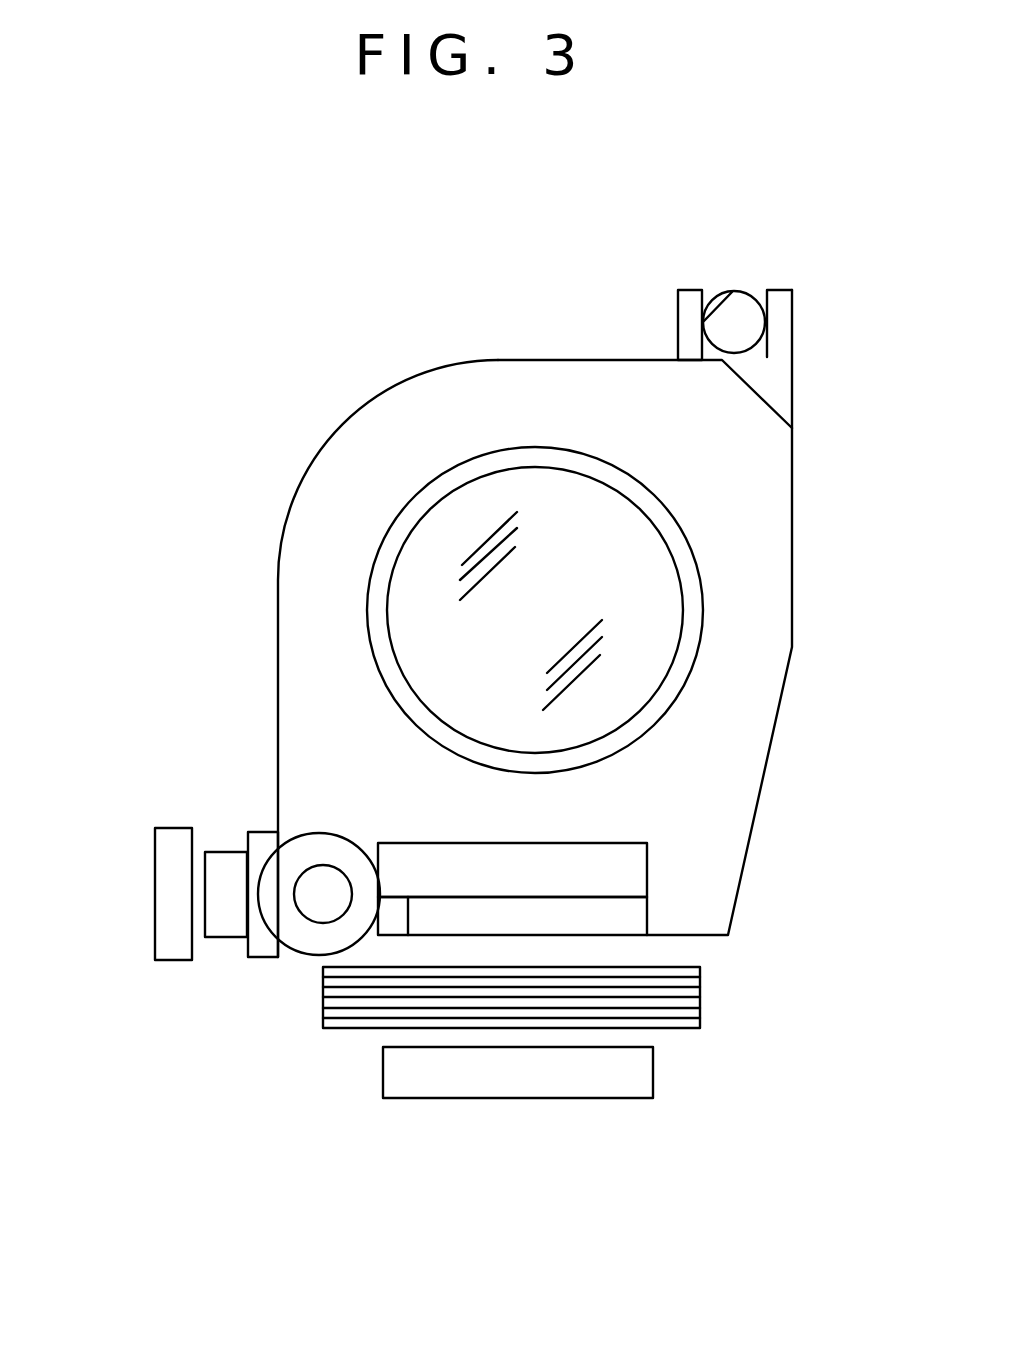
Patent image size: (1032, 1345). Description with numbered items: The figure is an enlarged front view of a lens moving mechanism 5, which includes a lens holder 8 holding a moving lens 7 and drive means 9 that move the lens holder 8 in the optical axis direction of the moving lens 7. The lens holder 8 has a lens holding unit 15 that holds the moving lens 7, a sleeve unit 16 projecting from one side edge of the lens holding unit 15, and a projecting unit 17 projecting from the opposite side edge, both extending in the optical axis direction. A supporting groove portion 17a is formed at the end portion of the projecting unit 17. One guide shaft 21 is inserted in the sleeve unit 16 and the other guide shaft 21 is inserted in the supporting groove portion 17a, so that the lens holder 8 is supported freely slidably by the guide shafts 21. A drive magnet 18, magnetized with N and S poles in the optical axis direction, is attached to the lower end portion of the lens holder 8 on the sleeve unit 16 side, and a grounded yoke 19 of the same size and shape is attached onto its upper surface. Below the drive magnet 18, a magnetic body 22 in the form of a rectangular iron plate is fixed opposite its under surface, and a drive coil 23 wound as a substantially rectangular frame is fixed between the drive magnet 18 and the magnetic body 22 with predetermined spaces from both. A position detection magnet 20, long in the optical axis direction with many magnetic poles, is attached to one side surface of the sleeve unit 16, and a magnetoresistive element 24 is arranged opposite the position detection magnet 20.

The lens moving mechanism 5 is at (300, 343).
The moving lens 7 is at (508, 497).
The lens holder 8 is at (760, 517).
The drive means 9 is at (768, 988).
The lens holding unit 15 is at (330, 513).
The sleeve unit 16 is at (330, 845).
The projecting unit 17 is at (765, 375).
The supporting groove portion 17a is at (732, 292).
The drive magnet 18 is at (628, 915).
The grounded yoke 19 is at (628, 868).
The position detection magnet 20 is at (228, 865).
The guide shaft 21 is at (745, 322).
The magnetic body 22 is at (483, 1077).
The drive coil 23 is at (690, 1015).
The magnetoresistive element 24 is at (163, 890).